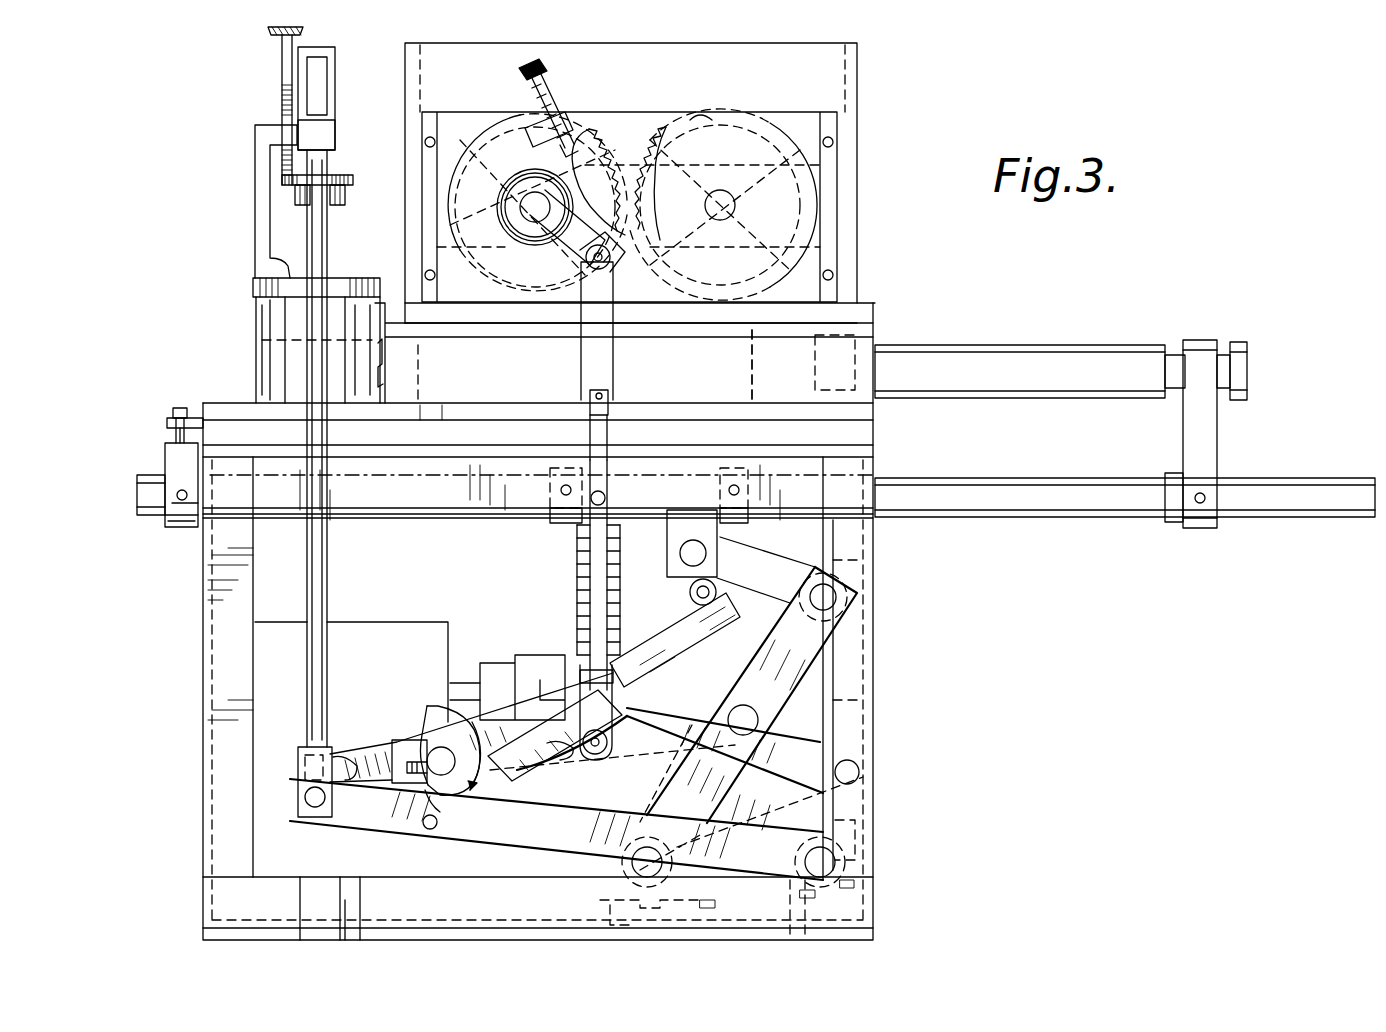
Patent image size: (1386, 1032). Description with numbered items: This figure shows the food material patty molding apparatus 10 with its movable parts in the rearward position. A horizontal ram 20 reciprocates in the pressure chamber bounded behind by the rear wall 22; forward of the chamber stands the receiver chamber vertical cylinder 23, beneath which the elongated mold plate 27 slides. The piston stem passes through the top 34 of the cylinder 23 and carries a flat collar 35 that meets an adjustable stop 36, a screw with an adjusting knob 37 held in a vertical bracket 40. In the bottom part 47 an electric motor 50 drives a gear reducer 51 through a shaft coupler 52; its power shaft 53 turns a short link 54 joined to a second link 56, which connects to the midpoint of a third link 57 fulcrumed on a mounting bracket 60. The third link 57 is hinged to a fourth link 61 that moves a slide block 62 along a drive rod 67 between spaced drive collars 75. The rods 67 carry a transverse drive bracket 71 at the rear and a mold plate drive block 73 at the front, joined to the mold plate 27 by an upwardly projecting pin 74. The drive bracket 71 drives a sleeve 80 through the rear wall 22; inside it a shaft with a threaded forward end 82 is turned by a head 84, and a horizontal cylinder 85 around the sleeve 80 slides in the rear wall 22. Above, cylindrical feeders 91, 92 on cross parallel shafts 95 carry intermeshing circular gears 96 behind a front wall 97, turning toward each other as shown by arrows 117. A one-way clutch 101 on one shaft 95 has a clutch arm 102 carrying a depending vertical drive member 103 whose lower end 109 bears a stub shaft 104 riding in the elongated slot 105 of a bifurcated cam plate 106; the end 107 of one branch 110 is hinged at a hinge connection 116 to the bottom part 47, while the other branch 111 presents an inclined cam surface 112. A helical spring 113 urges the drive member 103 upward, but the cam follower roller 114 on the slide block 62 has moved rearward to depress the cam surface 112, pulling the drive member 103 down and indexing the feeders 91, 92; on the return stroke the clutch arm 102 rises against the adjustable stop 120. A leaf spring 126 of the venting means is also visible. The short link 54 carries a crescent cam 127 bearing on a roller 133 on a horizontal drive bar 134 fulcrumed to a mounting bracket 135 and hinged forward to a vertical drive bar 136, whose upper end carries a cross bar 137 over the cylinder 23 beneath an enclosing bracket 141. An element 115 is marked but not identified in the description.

The molding apparatus 10 is at (860, 207).
The horizontal ram 20 is at (775, 375).
The rear wall 22 is at (873, 421).
The receiver chamber vertical cylinder 23 is at (272, 341).
The mold plate 27 is at (188, 412).
The top of the cylinder 34 is at (343, 290).
The flat collar 35 is at (340, 180).
The adjustable stop 36 is at (282, 100).
The adjusting knob 37 is at (268, 31).
The vertical bracket 40 is at (258, 240).
The bottom part 47 is at (855, 633).
The electric motor 50 is at (840, 690).
The gear reducer 51 is at (380, 657).
The shaft coupler 52 is at (525, 670).
The power shaft 53 is at (340, 760).
The short link 54 is at (370, 757).
The second link 56 is at (473, 800).
The third link 57 is at (795, 683).
The mounting bracket 60 is at (577, 908).
The fourth link 61 is at (775, 592).
The slide block 62 is at (668, 543).
The drive rod 67 is at (958, 520).
The transverse drive bracket 71 is at (1215, 433).
The mold plate drive block 73 is at (165, 466).
The upwardly projecting pin 74 is at (166, 424).
The drive collar 75 is at (560, 520).
The sleeve 80 is at (1224, 358).
The threaded forward end 82 is at (855, 348).
The head 84 is at (1240, 347).
The horizontal cylinder 85 is at (1025, 365).
The cylindrical feeder 91 is at (483, 140).
The cylindrical feeder 92 is at (735, 135).
The cross parallel shaft 95 is at (512, 232).
The intermeshing circular gear 96 is at (612, 203).
The front wall 97 is at (712, 125).
The one-way clutch 101 is at (523, 232).
The clutch arm 102 is at (587, 266).
The vertical drive member 103 is at (612, 395).
The stub shaft 104 is at (596, 760).
The elongated slot 105 is at (572, 765).
The cam plate 106 is at (712, 708).
The end of branch 107 is at (870, 753).
The lower end of drive member 109 is at (607, 744).
The branch 110 is at (790, 777).
The branch 111 is at (690, 650).
The inclined cam surface 112 is at (610, 670).
The helical spring 113 is at (582, 556).
The cam follower roller 114 is at (690, 594).
The pivot pin 115 is at (858, 775).
The hinge connection 116 is at (598, 340).
The arrows 117 is at (580, 170).
The adjustable stop 120 is at (552, 97).
The leaf spring 126 is at (385, 377).
The crescent cam 127 is at (437, 722).
The roller 133 is at (400, 840).
The horizontal drive bar 134 is at (570, 845).
The mounting bracket 135 is at (875, 848).
The vertical drive bar 136 is at (320, 84).
The cross bar 137 is at (322, 134).
The enclosing bracket 141 is at (322, 50).